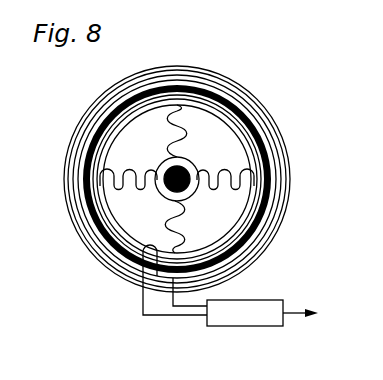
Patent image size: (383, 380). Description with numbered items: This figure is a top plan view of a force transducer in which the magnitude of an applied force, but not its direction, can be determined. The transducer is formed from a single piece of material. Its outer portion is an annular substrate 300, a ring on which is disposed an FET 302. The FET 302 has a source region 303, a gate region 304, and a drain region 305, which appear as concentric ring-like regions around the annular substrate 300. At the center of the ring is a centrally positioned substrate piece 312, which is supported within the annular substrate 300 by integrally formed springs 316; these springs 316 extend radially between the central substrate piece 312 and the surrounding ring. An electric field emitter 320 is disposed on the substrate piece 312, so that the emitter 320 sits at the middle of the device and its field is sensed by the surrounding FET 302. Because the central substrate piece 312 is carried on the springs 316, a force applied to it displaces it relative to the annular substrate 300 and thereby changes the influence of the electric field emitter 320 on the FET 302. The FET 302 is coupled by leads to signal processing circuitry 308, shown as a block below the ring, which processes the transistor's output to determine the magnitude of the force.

The FET 302 is at (187, 73).
The annular substrate 300 is at (277, 147).
The source region 303 is at (256, 250).
The drain region 305 is at (280, 172).
The gate region 304 is at (268, 202).
The substrate piece 312 is at (193, 164).
The springs 316 is at (165, 141).
The electric field emitter 320 is at (160, 193).
The signal processing circuitry 308 is at (253, 318).